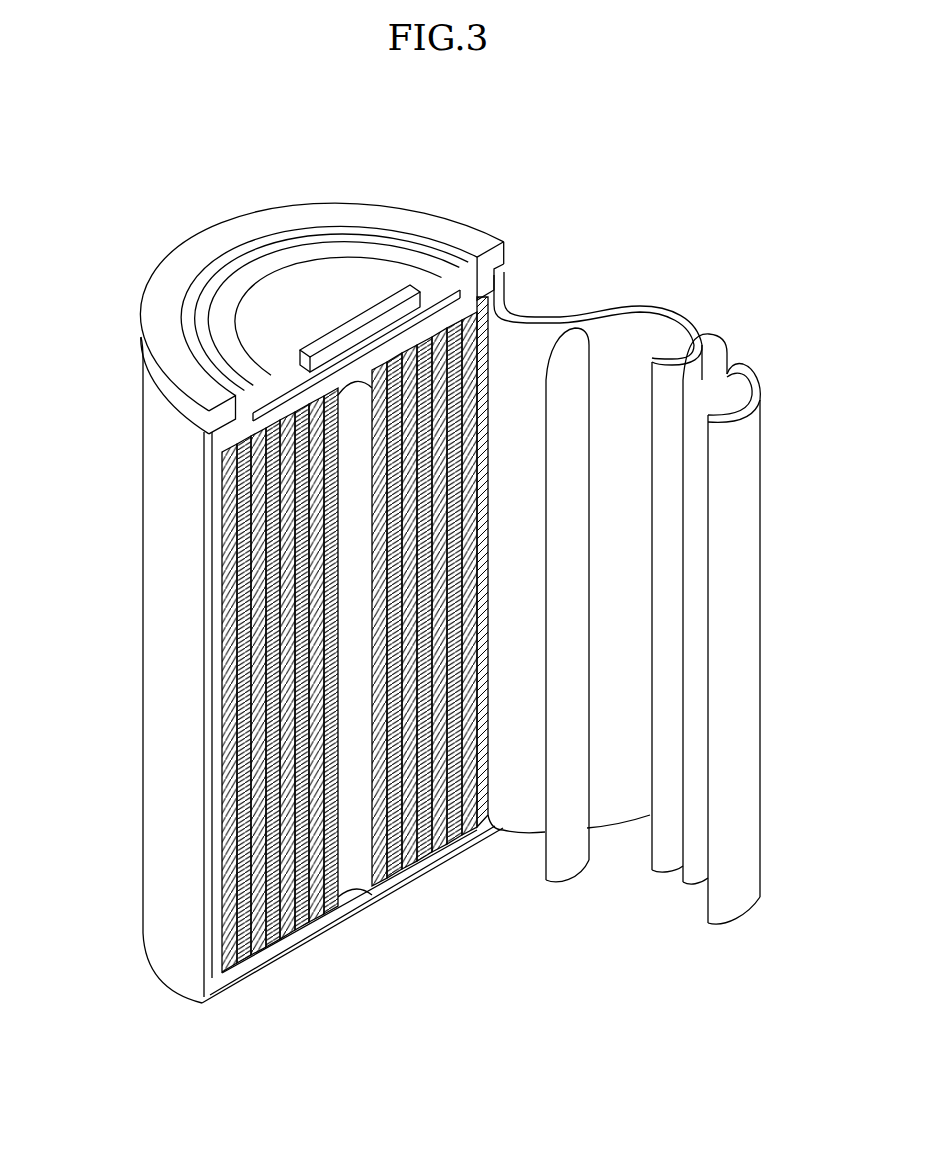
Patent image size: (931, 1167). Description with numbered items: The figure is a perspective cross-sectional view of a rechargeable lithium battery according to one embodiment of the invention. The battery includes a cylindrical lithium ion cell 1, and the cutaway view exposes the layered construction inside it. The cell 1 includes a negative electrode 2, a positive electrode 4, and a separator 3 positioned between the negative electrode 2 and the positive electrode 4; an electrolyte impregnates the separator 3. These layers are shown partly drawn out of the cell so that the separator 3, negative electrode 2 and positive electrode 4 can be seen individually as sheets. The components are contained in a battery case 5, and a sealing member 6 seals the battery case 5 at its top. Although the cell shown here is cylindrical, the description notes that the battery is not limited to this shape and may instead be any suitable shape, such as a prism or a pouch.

The cylindrical lithium ion cell 1 is at (713, 277).
The negative electrode 2 is at (742, 483).
The separator 3 is at (668, 380).
The positive electrode 4 is at (712, 392).
The battery case 5 is at (170, 818).
The sealing member 6 is at (335, 280).